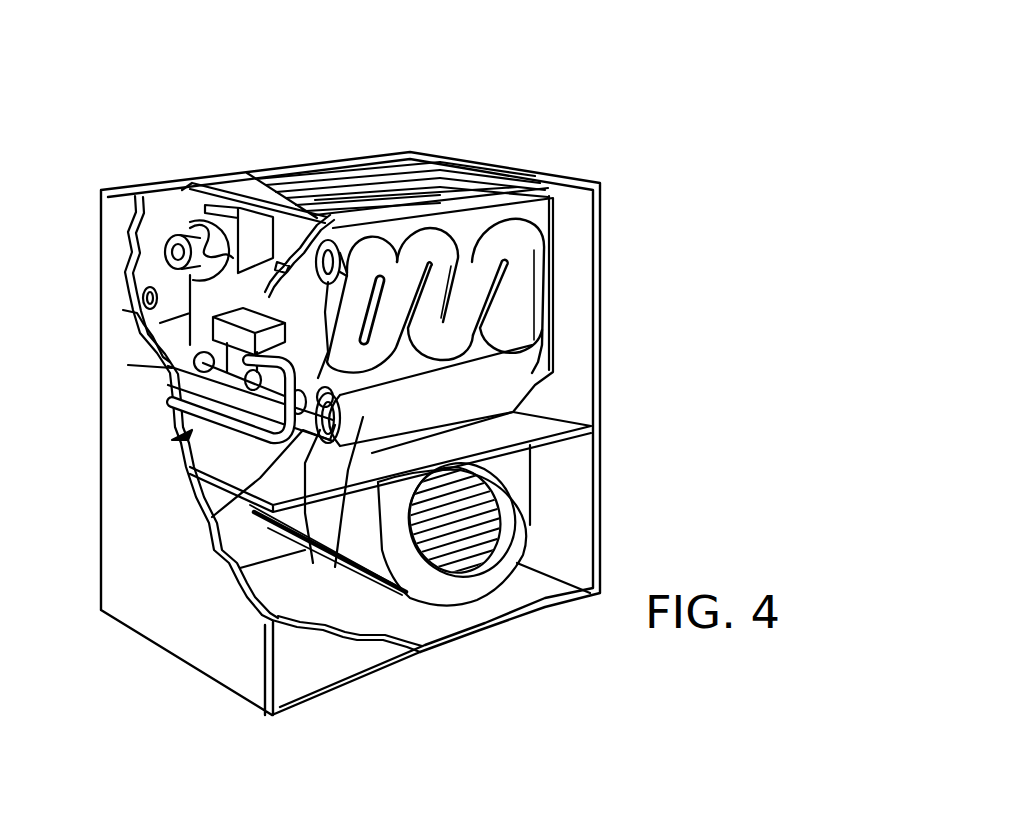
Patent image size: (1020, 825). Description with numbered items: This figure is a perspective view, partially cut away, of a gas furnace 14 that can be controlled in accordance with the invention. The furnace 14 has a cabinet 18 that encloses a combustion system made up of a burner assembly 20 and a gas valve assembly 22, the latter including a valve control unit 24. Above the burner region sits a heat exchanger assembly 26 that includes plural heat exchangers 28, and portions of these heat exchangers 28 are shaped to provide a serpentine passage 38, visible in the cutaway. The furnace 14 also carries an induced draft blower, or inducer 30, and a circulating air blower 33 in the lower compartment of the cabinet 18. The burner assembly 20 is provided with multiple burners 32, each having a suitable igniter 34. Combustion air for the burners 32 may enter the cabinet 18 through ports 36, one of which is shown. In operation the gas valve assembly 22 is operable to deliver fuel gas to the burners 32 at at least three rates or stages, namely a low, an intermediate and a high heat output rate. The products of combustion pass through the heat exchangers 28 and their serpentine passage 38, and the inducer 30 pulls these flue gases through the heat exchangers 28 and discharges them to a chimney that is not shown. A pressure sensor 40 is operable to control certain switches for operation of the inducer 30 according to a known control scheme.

The gas furnace 14 is at (606, 256).
The cabinet 18 is at (207, 637).
The burner assembly 20 is at (178, 437).
The gas valve assembly 22 is at (180, 411).
The valve control unit 24 is at (195, 413).
The heat exchanger assembly 26 is at (383, 165).
The heat exchangers 28 is at (473, 186).
The induced draft blower or inducer 30 is at (187, 228).
The burners 32 is at (128, 365).
The circulating air blower 33 is at (490, 570).
The igniter 34 is at (336, 565).
The ports 36 is at (140, 297).
The serpentine passage 38 is at (407, 337).
The pressure sensor 40 is at (283, 262).